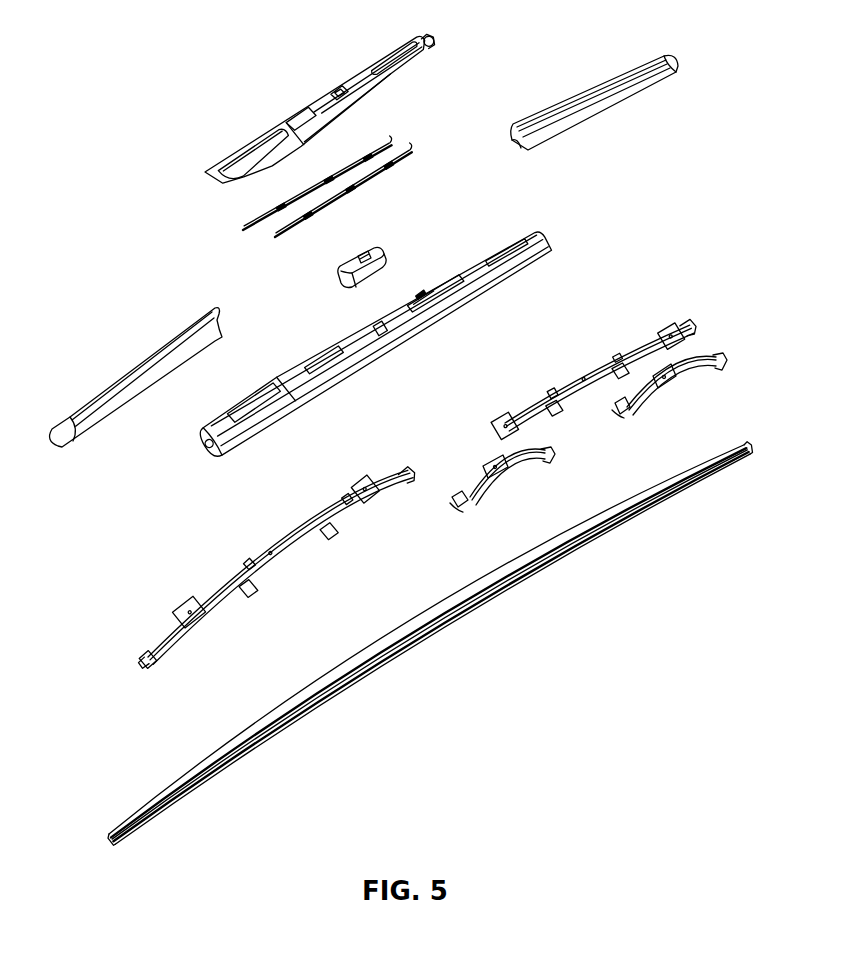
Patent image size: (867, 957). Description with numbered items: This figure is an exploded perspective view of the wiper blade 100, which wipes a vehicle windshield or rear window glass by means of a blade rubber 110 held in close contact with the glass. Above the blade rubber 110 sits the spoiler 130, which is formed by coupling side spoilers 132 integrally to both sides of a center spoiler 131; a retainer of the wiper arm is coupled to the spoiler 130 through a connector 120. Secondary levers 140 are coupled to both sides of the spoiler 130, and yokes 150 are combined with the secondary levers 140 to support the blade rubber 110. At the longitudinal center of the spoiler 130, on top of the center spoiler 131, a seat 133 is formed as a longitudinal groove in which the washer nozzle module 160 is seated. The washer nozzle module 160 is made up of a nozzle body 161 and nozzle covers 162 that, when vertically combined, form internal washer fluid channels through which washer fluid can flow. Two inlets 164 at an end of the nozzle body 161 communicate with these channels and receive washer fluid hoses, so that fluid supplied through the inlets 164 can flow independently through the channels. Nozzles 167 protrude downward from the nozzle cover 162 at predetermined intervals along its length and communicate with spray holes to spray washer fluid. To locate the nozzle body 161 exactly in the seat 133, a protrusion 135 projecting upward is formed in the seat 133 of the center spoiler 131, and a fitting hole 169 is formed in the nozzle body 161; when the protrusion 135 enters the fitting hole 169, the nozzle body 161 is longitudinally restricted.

The wiper blade 100 is at (707, 223).
The blade rubber 110 is at (462, 612).
The connector 120 is at (378, 253).
The spoiler 130 is at (147, 517).
The center spoiler 131 is at (196, 449).
The side spoiler 132 is at (111, 410).
The seat 133 is at (345, 348).
The protrusion 135 is at (422, 295).
The secondary lever 140 is at (292, 533).
The yoke 150 is at (180, 640).
The washer nozzle module 160 is at (182, 280).
The nozzle body 161 is at (210, 178).
The nozzle cover 162 is at (242, 231).
The inlet 164 is at (429, 40).
The nozzle 167 is at (316, 215).
The fitting hole 169 is at (339, 93).